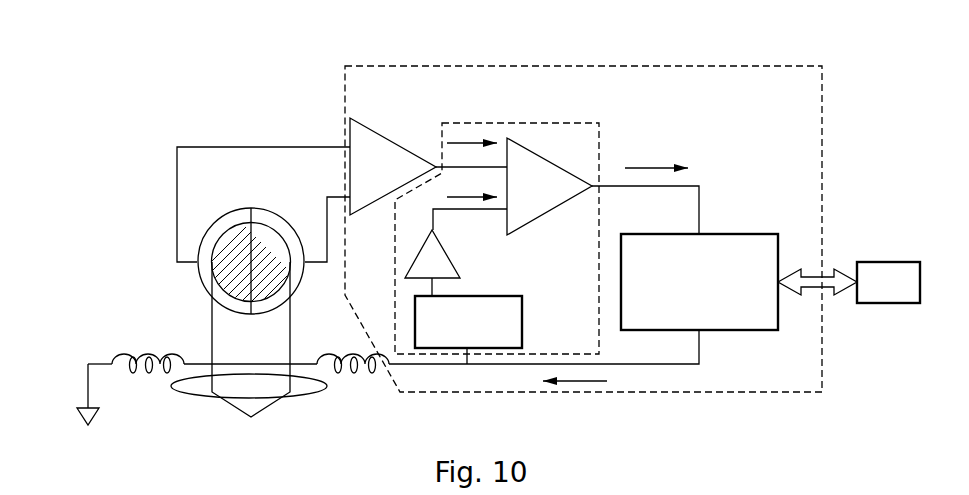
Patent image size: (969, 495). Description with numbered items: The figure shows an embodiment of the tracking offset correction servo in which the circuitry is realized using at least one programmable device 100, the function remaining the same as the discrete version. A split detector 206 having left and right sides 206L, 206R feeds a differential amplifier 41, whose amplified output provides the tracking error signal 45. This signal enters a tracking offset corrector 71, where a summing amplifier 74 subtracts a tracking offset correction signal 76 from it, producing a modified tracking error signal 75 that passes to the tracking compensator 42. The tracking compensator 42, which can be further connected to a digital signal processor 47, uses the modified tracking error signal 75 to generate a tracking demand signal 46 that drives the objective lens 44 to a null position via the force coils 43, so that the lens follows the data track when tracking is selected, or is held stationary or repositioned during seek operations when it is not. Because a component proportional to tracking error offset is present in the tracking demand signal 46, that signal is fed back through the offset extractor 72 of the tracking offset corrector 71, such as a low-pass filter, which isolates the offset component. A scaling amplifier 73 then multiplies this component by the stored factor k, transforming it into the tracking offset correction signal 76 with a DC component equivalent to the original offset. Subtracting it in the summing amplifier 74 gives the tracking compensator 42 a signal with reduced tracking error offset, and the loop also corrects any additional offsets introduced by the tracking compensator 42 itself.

The programmable device 100 is at (618, 65).
The differential amplifier 41 is at (363, 122).
The tracking error signal 45 is at (473, 140).
The tracking offset corrector 71 is at (563, 122).
The summing amplifier 74 is at (570, 168).
The modified tracking error signal 75 is at (652, 167).
The tracking compensator 42 is at (755, 233).
The digital signal processor 47 is at (885, 261).
The tracking offset correction signal 76 is at (475, 200).
The scaling amplifier 73 is at (460, 278).
The offset extractor 72 is at (522, 323).
The tracking demand signal 46 is at (583, 382).
The force coils 43 is at (377, 366).
The objective lens 44 is at (313, 397).
The split detector 206 is at (250, 205).
The left side of split detector 206L is at (196, 288).
The right side of split detector 206R is at (305, 287).